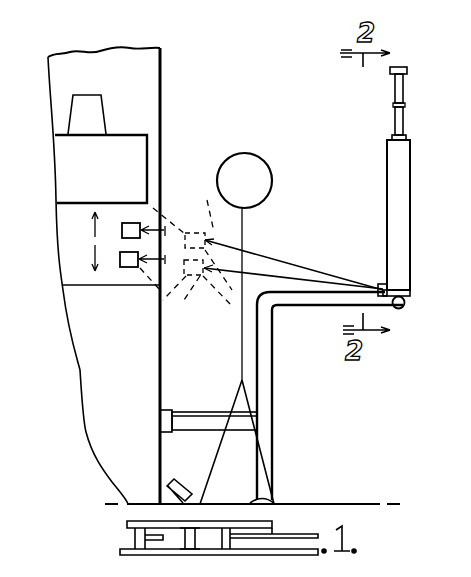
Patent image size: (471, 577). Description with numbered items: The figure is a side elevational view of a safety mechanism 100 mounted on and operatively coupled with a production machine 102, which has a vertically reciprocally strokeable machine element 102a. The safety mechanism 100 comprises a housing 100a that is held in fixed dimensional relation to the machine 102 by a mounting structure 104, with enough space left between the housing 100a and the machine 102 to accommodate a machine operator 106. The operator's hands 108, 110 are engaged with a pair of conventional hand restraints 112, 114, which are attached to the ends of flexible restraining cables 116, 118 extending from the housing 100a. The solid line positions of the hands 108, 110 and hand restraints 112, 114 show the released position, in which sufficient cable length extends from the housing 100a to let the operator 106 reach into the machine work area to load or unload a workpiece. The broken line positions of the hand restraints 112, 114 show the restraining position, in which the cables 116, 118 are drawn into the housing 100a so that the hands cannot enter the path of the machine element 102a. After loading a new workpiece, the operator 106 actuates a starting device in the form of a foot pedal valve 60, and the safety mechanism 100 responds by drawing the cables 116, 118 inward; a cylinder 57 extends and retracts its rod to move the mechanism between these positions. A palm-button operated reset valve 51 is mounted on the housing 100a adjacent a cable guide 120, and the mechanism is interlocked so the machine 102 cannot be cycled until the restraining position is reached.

The safety mechanism 100 is at (370, 149).
The housing 100a is at (383, 187).
The production machine 102 is at (181, 61).
The machine element 102a is at (148, 146).
The mounting structure 104 is at (316, 307).
The machine operator 106 is at (240, 154).
The operator's hand 108 is at (140, 252).
The operator's hand 110 is at (148, 236).
The hand restraint 112 is at (157, 305).
The hand restraint 114 is at (143, 203).
The flexible restraining cable 116 is at (276, 276).
The flexible restraining cable 118 is at (246, 250).
The cable guide 120 is at (382, 308).
The reset valve 51 is at (382, 283).
The cylinder 57 is at (397, 87).
The foot pedal valve 60 is at (180, 481).